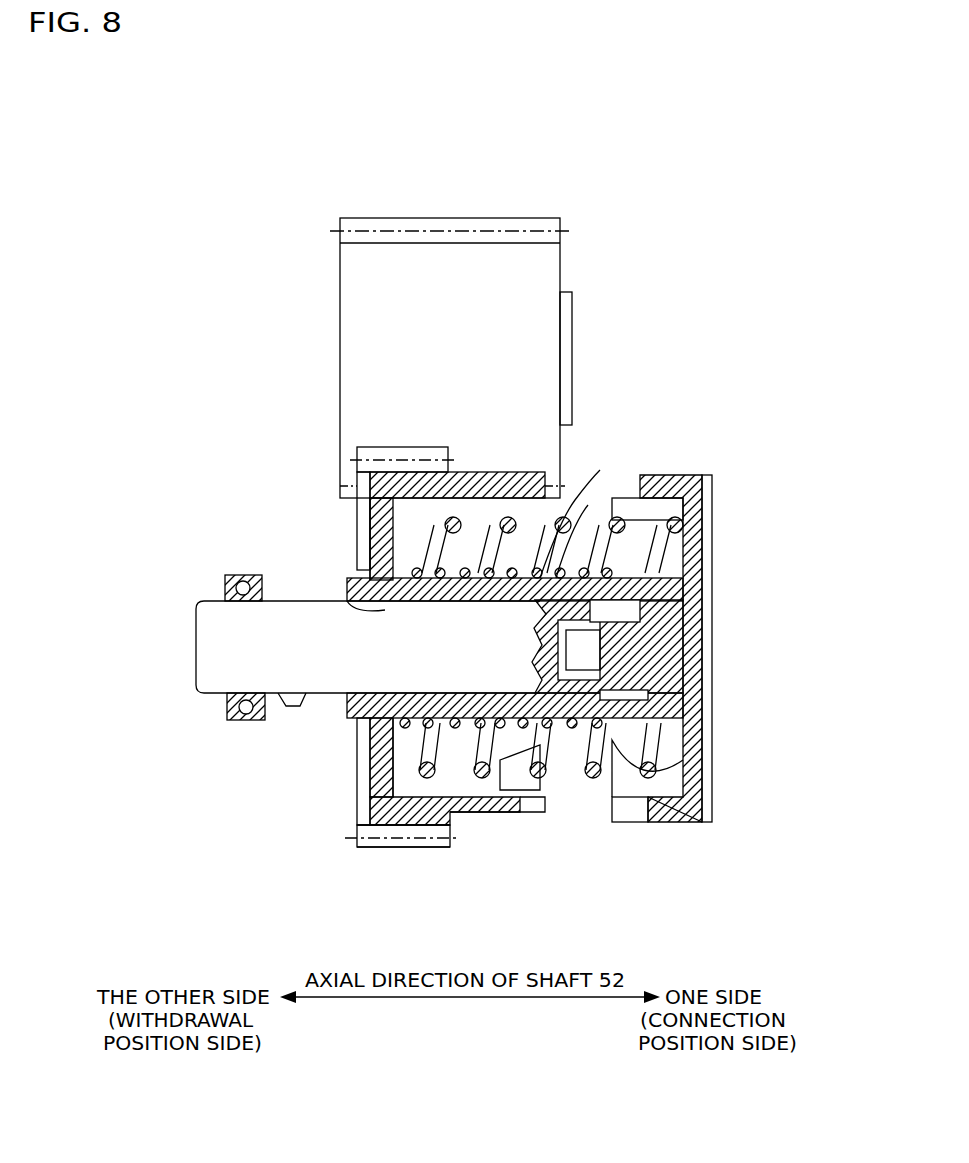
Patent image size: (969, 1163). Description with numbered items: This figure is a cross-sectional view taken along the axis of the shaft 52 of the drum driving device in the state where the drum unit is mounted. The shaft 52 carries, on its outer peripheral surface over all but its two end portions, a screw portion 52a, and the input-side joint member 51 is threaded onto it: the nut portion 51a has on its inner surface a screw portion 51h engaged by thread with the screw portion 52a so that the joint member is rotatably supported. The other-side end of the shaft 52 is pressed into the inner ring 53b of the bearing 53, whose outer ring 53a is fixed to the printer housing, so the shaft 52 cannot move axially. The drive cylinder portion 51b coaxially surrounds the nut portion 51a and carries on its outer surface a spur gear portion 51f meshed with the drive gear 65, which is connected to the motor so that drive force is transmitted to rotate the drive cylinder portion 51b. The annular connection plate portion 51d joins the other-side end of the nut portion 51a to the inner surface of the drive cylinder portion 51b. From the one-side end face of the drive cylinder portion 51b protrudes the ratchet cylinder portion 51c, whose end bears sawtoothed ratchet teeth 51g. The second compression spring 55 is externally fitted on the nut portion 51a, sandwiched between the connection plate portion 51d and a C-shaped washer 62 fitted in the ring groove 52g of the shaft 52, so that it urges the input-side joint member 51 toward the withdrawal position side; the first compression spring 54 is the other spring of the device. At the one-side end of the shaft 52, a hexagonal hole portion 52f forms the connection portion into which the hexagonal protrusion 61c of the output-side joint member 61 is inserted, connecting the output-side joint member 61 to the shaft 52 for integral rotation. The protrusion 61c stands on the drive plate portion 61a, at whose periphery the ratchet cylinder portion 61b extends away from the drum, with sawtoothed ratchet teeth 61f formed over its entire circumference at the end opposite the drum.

The input-side joint member 51 is at (432, 858).
The nut portion 51a is at (378, 580).
The drive cylinder portion 51b is at (408, 848).
The ratchet cylinder portion 51c is at (468, 836).
The connection plate portion 51d is at (382, 762).
The gear portion 51f is at (368, 842).
The ratchet teeth 51g is at (512, 812).
The screw portion 51h is at (357, 604).
The shaft 52 is at (207, 652).
The screw portion 52a is at (345, 705).
The hole portion 52f is at (640, 675).
The ring groove 52g is at (662, 697).
The bearing 53 is at (188, 624).
The outer ring 53a is at (240, 578).
The inner ring 53b is at (230, 595).
The first compression spring 54 is at (574, 515).
The second compression spring 55 is at (602, 515).
The output-side joint member 61 is at (691, 675).
The drive plate portion 61a is at (700, 778).
The ratchet cylinder portion 61b is at (668, 812).
The protrusion 61c is at (590, 722).
The ratchet teeth 61f is at (630, 812).
The washer 62 is at (650, 538).
The drive gear 65 is at (356, 332).